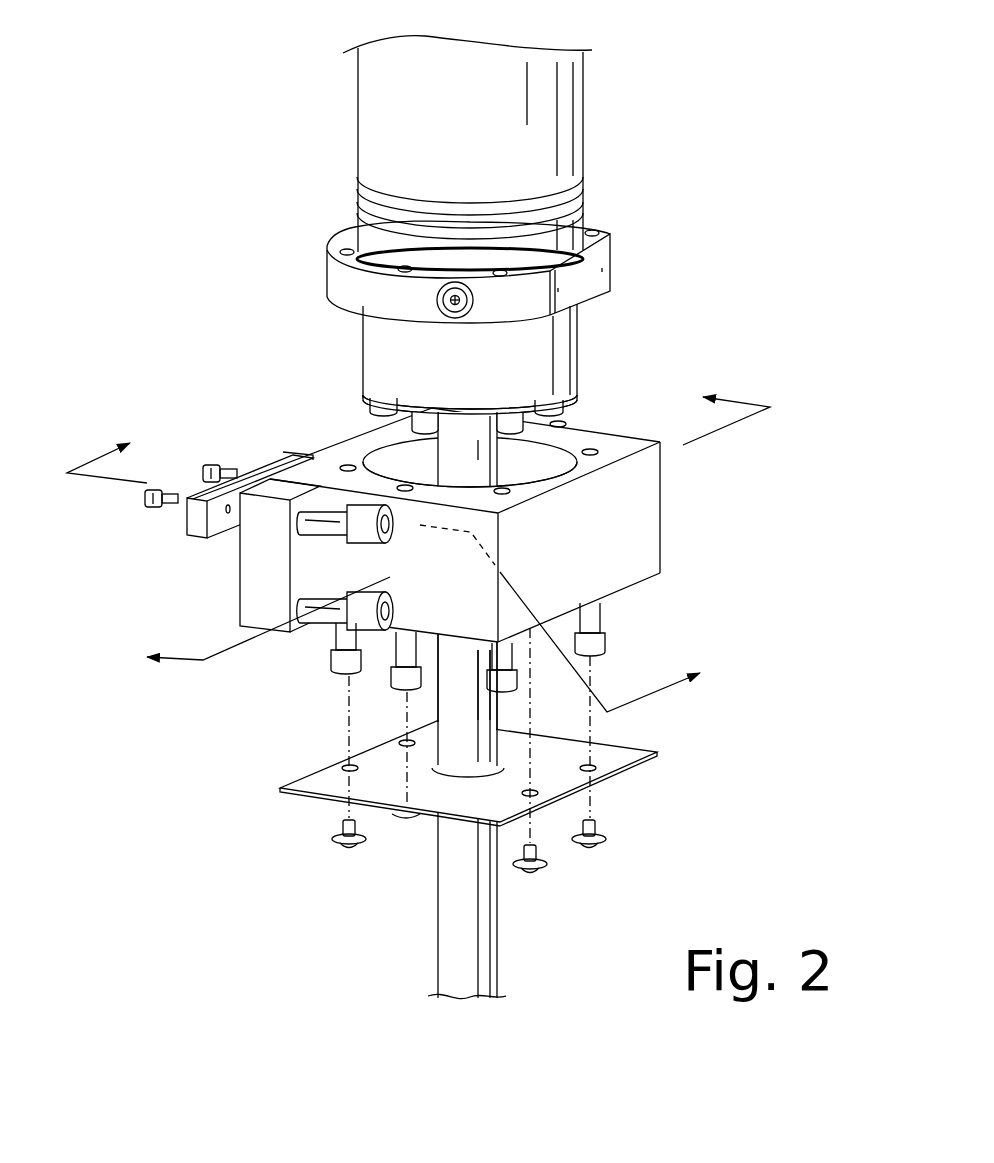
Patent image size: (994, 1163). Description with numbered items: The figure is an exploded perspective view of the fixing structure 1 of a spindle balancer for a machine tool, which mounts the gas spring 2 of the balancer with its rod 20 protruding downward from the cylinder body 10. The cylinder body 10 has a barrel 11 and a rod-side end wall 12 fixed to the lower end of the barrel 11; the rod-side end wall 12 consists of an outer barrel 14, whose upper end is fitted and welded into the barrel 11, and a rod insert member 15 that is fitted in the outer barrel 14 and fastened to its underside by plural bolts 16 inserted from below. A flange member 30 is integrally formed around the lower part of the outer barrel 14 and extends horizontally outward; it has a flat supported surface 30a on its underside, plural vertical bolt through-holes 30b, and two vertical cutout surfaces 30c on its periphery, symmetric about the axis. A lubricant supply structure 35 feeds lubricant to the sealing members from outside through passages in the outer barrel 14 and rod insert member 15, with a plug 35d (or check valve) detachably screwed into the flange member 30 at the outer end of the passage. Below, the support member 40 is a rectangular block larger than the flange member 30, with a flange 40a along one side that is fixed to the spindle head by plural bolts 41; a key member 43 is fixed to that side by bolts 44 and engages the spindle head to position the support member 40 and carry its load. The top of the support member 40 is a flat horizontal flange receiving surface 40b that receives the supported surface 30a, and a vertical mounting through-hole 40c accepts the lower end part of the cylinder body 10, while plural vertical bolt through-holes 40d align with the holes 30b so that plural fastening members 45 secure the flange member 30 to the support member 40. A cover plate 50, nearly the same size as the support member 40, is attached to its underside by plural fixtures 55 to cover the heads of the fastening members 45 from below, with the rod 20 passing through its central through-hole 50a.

The fixing structure 1 is at (705, 297).
The gas spring 2 is at (614, 88).
The cylinder body 10 is at (355, 100).
The barrel 11 is at (368, 139).
The rod-side end wall 12 is at (237, 214).
The outer barrel 14 is at (353, 232).
The rod insert member 15 is at (372, 333).
The bolts 16 is at (367, 405).
The rod 20 is at (500, 950).
The flange member 30 is at (596, 231).
The supported surface 30a is at (503, 328).
The bolt through-holes 30b is at (407, 266).
The cutout surfaces 30c is at (583, 292).
The lubricant supply structure 35 is at (433, 310).
The plug 35d is at (455, 309).
The support member 40 is at (665, 492).
The flange 40a is at (253, 608).
The flange receiving surface 40b is at (617, 438).
The mounting through-hole 40c is at (387, 457).
The bolt through-holes 40d is at (590, 456).
The bolts 41 is at (393, 527).
The key member 43 is at (195, 527).
The bolts 44 is at (200, 470).
The fastening members 45 is at (337, 672).
The cover plate 50 is at (630, 763).
The through-hole 50a is at (463, 773).
The fixtures 55 is at (353, 848).